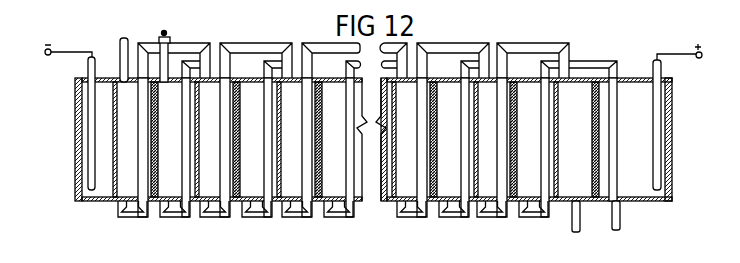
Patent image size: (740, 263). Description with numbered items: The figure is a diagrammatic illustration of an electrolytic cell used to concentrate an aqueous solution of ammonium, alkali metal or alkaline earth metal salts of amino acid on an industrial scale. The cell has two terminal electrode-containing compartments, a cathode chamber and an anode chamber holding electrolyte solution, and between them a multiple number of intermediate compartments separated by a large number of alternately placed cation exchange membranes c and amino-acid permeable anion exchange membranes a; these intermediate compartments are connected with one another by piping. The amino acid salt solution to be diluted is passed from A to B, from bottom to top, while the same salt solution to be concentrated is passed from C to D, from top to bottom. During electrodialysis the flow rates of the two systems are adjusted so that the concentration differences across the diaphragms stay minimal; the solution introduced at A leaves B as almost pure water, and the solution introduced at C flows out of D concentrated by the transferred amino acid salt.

The anion exchange membrane a is at (156, 90).
The cation exchange membrane c is at (116, 90).
The inlet for solution to be diluted A is at (575, 238).
The outlet for diluted solution B is at (124, 12).
The inlet for solution to be concentrated C is at (165, 22).
The outlet for concentrated solution D is at (616, 233).